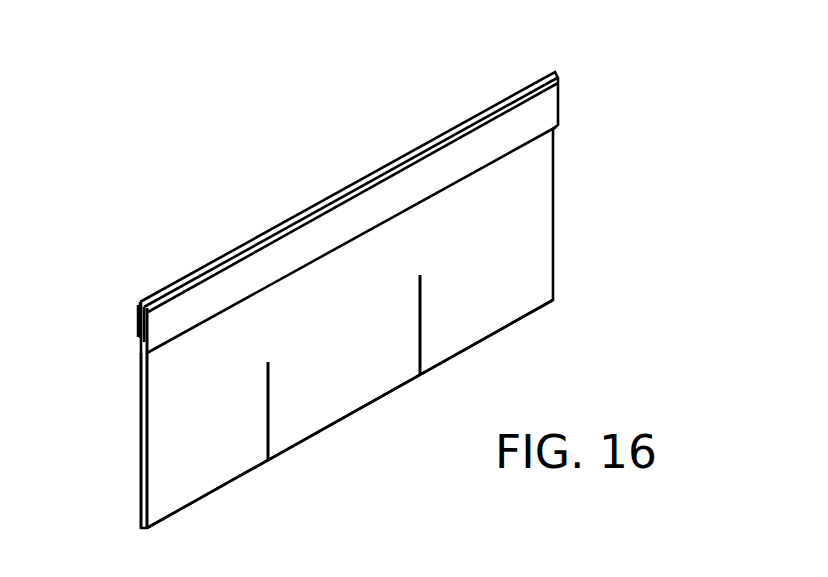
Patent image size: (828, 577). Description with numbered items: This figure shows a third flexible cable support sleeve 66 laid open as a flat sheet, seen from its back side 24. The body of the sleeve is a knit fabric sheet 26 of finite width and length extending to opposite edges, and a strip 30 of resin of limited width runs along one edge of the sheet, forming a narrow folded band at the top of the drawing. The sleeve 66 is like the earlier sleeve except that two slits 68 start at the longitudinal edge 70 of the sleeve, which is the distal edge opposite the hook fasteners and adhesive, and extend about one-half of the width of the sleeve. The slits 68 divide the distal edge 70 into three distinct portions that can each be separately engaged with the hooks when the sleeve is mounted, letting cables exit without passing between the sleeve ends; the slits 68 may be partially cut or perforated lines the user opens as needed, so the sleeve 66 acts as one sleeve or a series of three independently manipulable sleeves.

The back side 24 is at (363, 346).
The knit fabric sheet 26 is at (140, 460).
The strip of resin 30 is at (135, 318).
The sleeve 66 is at (374, 143).
The slits 68 is at (265, 402).
The longitudinal edge 70 is at (360, 410).